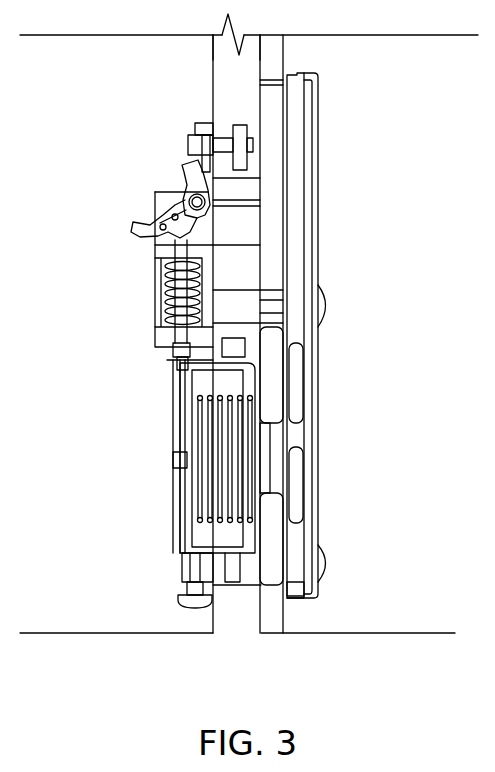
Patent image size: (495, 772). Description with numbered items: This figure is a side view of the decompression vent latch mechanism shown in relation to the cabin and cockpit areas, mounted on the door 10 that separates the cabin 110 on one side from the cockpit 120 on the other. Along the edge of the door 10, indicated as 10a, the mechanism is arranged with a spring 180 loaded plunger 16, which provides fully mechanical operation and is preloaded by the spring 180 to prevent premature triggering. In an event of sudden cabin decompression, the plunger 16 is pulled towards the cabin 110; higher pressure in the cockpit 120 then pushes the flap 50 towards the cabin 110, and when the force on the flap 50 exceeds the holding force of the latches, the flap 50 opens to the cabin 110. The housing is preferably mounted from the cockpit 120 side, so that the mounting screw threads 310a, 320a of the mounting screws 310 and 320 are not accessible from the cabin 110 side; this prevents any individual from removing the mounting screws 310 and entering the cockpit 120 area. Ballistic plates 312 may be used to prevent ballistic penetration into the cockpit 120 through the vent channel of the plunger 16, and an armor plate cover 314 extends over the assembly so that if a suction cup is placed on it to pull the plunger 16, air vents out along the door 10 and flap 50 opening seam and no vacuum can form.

The door 10 is at (240, 600).
The door edge 10a is at (226, 63).
The cabin 110 is at (431, 633).
The cockpit 120 is at (63, 633).
The ballistic plate 312 is at (315, 160).
The armor plate cover 314 is at (333, 429).
The mounting screw 320 is at (331, 305).
The mounting screw thread 320a is at (238, 290).
The flap 50 is at (273, 376).
The mounting screw 310 is at (331, 560).
The mounting screw thread 310a is at (273, 612).
The spring 180 is at (198, 478).
The plunger 16 is at (200, 537).